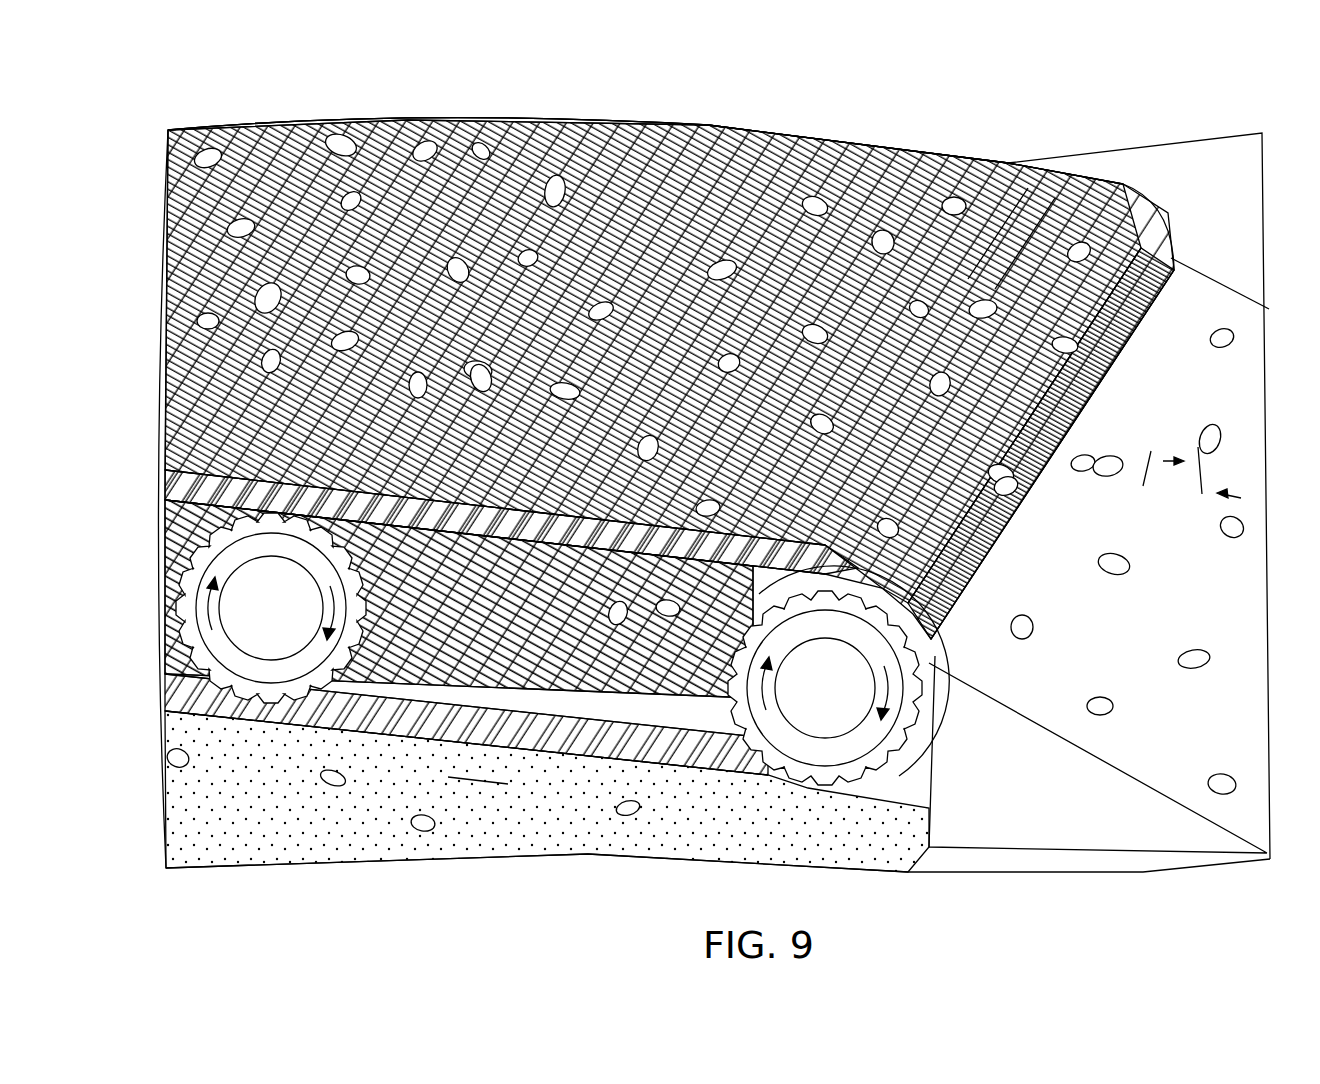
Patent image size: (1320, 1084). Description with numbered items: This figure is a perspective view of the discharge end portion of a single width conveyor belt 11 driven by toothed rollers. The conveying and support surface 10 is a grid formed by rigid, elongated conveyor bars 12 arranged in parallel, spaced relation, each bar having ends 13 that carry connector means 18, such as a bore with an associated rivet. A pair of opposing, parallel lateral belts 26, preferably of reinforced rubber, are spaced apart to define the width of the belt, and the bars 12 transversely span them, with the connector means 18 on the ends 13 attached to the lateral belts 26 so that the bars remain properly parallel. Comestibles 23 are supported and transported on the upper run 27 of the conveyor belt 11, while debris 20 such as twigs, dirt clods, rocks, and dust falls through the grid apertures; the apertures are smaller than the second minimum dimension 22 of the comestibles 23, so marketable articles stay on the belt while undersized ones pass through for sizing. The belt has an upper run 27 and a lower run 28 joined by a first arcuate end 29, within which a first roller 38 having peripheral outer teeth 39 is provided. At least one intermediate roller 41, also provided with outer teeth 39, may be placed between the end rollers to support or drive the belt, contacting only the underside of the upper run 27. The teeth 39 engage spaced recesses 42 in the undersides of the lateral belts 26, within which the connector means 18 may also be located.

The conveying and support surface 10 is at (385, 140).
The conveyor belt 11 is at (943, 103).
The conveyor bars 12 is at (452, 112).
The ends 13 is at (1020, 180).
The connector means 18 is at (845, 133).
The debris 20 is at (360, 790).
The second minimum dimension 22 is at (1183, 483).
The comestibles 23 is at (643, 138).
The lateral belts 26 is at (1092, 178).
The upper run 27 is at (550, 104).
The lower run 28 is at (463, 768).
The first arcuate end 29 is at (875, 781).
The first roller 38 is at (862, 722).
The peripheral outer teeth 39 is at (233, 690).
The intermediate roller 41 is at (267, 667).
The recesses 42 is at (185, 560).